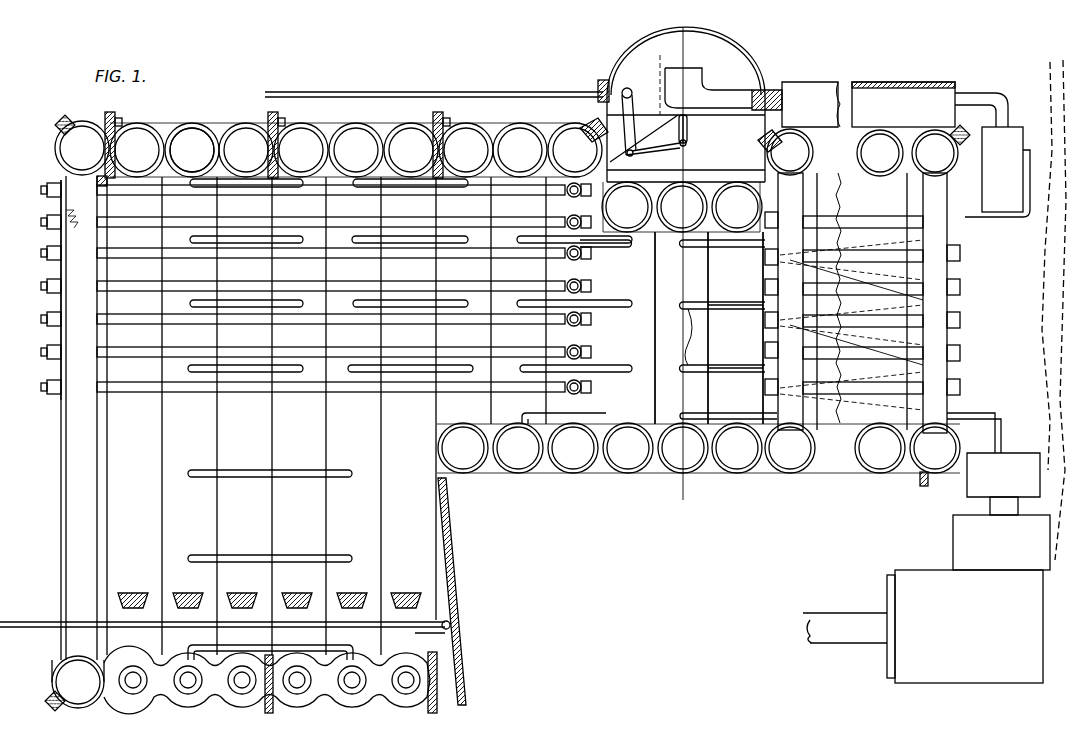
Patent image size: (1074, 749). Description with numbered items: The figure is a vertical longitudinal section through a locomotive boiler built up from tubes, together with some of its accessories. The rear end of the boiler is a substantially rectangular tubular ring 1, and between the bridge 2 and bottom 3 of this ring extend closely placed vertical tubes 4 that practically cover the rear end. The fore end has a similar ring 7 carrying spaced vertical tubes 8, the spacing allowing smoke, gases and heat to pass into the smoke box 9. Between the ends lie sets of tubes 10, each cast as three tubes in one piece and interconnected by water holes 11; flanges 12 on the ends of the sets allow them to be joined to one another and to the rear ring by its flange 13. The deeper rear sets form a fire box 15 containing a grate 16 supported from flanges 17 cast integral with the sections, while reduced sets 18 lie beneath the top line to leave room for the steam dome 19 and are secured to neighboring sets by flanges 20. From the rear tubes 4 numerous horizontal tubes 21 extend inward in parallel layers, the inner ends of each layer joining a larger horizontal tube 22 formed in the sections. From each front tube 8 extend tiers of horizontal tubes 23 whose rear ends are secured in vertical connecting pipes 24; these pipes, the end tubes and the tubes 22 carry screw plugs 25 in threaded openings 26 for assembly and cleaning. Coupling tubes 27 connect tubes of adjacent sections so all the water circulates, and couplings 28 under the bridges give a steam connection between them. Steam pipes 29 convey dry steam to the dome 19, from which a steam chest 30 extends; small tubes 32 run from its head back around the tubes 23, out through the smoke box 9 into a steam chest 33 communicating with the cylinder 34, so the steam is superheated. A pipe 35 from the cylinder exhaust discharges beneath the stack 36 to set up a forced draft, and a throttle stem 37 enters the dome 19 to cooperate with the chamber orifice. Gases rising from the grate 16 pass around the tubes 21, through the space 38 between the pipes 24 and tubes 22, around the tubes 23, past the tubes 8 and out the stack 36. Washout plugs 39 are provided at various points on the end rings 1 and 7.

The tubular ring 1 is at (61, 440).
The bridge 2 is at (56, 150).
The bottom 3 is at (80, 700).
The vertical tubes 4 is at (66, 505).
The ring 7 is at (165, 120).
The tubes 8 is at (935, 393).
The smoke box 9 is at (1045, 316).
The sets of tubes 10 is at (518, 140).
The water holes 11 is at (192, 150).
The flanges 12 is at (268, 112).
The flange 13 is at (108, 118).
The fire box 15 is at (160, 640).
The grate 16 is at (135, 584).
The flanges 17 is at (22, 610).
The reduced sets 18 is at (700, 190).
The steam dome 19 is at (690, 26).
The flanges 20 is at (622, 142).
The horizontal tubes 21 is at (175, 248).
The horizontal tube 22 is at (632, 305).
The horizontal tubes 23 is at (898, 345).
The vertical connecting pipes 24 is at (755, 282).
The screw plugs 25 is at (44, 287).
The threaded openings 26 is at (44, 190).
The coupling tubes 27 is at (345, 244).
The couplings 28 is at (240, 180).
The steam pipes 29 is at (592, 130).
The steam chest 30 is at (892, 75).
The small tubes 32 is at (985, 215).
The steam chest 33 is at (1001, 511).
The cylinder 34 is at (923, 626).
The pipe 35 is at (1045, 274).
The stack 36 is at (1045, 70).
The throttle stem 37 is at (450, 92).
The space 38 is at (667, 328).
The washout plugs 39 is at (58, 125).